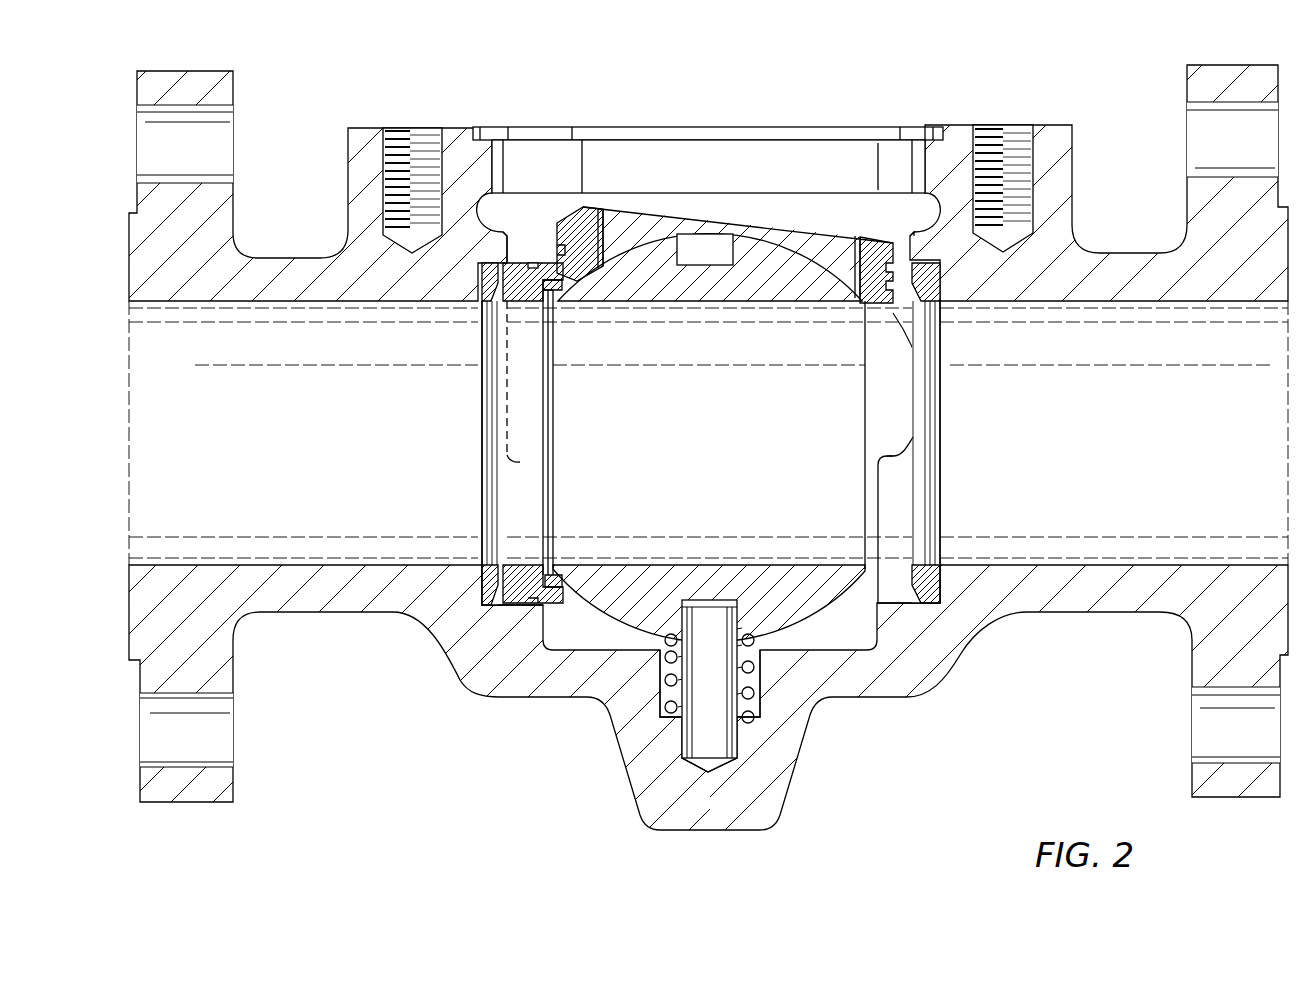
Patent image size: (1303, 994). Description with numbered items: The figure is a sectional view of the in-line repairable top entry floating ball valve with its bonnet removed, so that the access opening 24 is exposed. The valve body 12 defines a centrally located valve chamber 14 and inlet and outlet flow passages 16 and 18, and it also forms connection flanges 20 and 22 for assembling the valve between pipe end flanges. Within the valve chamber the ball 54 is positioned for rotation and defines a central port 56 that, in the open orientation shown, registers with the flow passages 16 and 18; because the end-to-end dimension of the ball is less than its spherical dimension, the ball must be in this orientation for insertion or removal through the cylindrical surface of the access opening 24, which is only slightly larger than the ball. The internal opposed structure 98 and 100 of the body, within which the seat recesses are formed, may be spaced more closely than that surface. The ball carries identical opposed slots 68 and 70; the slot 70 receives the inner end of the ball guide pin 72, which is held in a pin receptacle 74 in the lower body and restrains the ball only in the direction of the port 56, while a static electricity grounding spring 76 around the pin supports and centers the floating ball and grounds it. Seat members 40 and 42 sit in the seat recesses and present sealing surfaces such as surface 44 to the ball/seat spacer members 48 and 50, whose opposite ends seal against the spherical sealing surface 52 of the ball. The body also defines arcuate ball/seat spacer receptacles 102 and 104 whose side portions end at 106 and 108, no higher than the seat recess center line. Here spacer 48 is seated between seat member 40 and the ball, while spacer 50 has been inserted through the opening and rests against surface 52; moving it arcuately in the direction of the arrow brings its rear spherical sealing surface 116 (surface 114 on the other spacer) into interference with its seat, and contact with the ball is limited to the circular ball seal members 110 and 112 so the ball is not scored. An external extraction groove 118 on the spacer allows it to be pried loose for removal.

The valve body 12 is at (360, 226).
The valve chamber 14 is at (853, 640).
The inlet flow passage 16 is at (244, 565).
The outlet flow passage 18 is at (1105, 565).
The connection flange 20 is at (183, 72).
The connection flange 22 is at (1228, 66).
The access opening 24 is at (912, 165).
The seat member 40 is at (483, 593).
The seat member 42 is at (942, 598).
The sealing surface 44 is at (496, 405).
The ball/seat spacer member 48 is at (483, 517).
The ball/seat spacer member 50 is at (883, 243).
The spherical sealing surface 52 is at (800, 237).
The ball 54 is at (603, 592).
The central port 56 is at (694, 449).
The slot 68 is at (722, 243).
The slot 70 is at (727, 615).
The ball guide pin 72 is at (698, 683).
The pin receptacle 74 is at (705, 767).
The static electricity grounding spring 76 is at (752, 694).
The internal opposed structure 98 is at (503, 248).
The internal opposed structure 100 is at (922, 232).
The ball/seat spacer receptacle 102 is at (528, 507).
The ball/seat spacer receptacle 104 is at (892, 507).
The upper end of recess side portion 106 is at (520, 462).
The upper end of recess side portion 108 is at (900, 453).
The circular ball seal member 110 is at (553, 285).
The circular ball seal member 112 is at (556, 287).
The rear spherical shaped sealing surface 114 is at (484, 605).
The rear spherical shaped sealing surface 116 is at (578, 207).
The extraction groove 118 is at (533, 262).